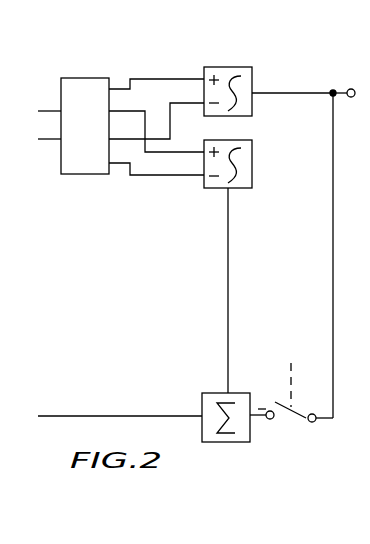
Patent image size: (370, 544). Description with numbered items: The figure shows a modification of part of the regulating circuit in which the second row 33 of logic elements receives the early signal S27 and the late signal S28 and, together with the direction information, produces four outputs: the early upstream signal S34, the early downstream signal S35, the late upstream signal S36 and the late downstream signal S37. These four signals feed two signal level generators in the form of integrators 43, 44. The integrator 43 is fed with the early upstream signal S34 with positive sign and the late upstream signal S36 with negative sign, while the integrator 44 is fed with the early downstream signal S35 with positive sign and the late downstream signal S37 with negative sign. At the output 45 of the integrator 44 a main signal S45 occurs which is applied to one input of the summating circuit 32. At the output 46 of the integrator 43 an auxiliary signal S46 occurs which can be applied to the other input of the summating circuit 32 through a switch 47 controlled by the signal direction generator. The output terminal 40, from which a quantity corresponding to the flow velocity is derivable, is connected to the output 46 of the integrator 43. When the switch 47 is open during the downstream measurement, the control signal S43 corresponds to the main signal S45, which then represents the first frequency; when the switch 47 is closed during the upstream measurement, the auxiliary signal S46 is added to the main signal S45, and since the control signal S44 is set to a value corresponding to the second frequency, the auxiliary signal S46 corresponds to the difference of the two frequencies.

The second row of logic elements 33 is at (73, 137).
The late signal S28 is at (47, 110).
The early signal S27 is at (45, 140).
The early upstream signal S34 is at (140, 79).
The early downstream signal S35 is at (139, 111).
The late upstream signal S36 is at (172, 127).
The late downstream signal S37 is at (130, 163).
The integrator 43 is at (243, 72).
The integrator 44 is at (240, 188).
The output of integrator 43 46 is at (315, 94).
The auxiliary signal S46 is at (287, 92).
The output terminal 40 is at (350, 86).
The output of integrator 44 45 is at (228, 293).
The main signal S45 is at (227, 274).
The control signal S43 is at (120, 394).
The control signal S44 is at (133, 413).
The summating circuit 32 is at (230, 442).
The switch 47 is at (297, 418).